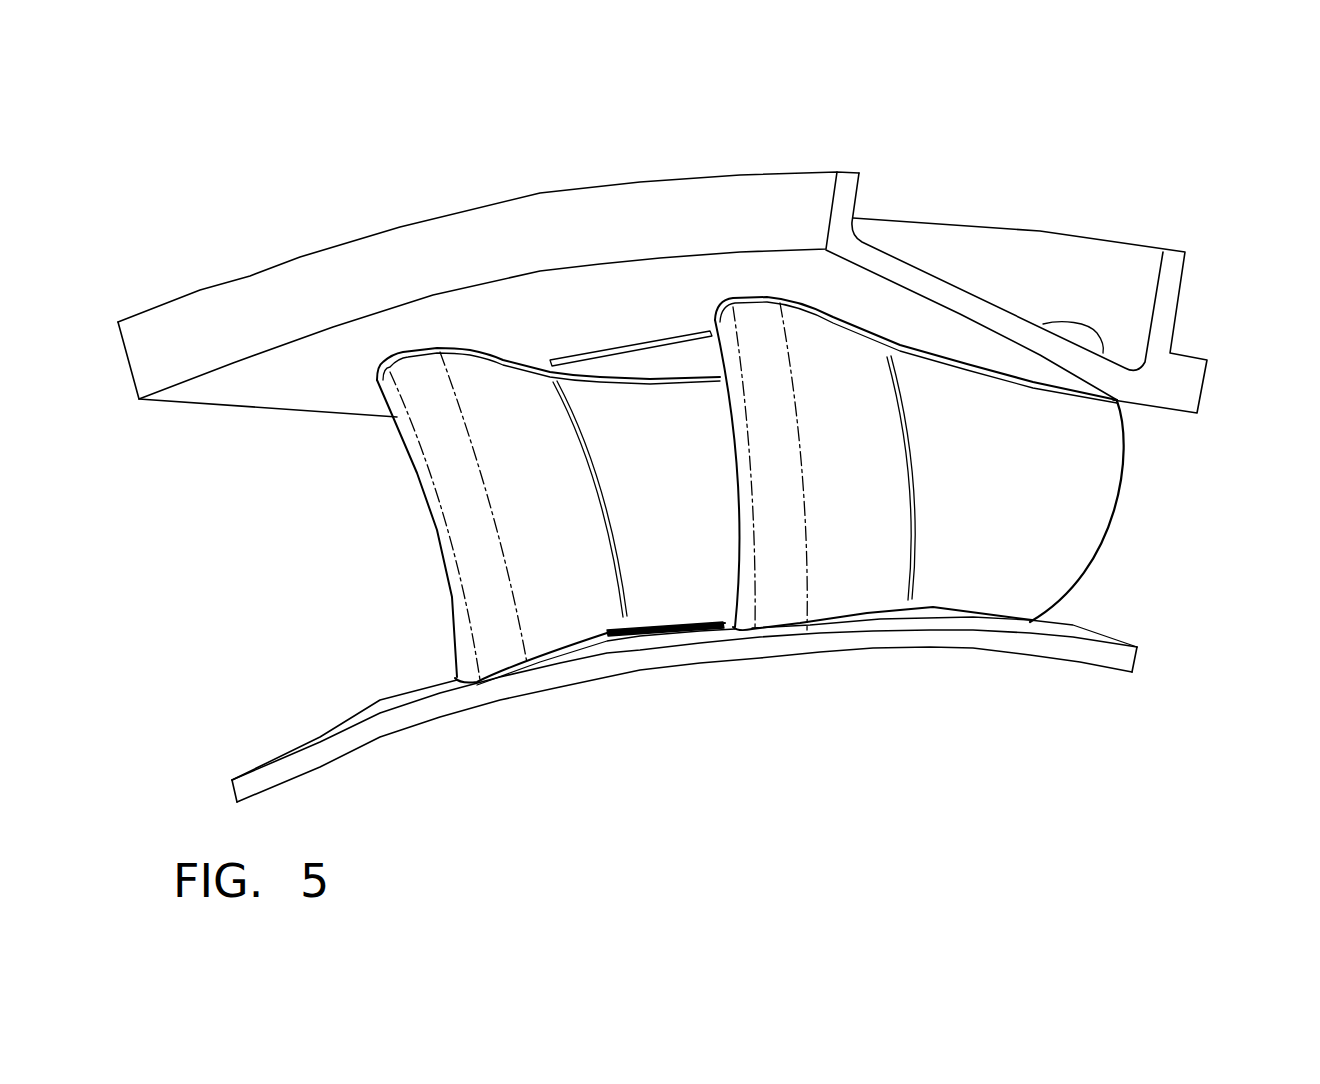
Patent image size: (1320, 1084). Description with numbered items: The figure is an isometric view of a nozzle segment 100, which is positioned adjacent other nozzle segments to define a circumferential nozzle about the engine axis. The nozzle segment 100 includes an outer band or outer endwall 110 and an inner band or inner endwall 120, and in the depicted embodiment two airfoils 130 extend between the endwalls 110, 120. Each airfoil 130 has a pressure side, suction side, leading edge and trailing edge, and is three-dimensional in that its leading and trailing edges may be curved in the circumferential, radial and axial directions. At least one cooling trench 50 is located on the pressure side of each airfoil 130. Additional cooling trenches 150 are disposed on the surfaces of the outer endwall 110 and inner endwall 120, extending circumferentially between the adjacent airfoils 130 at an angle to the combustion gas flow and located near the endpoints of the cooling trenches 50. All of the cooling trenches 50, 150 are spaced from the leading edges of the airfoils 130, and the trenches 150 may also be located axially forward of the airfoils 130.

The nozzle segment 100 is at (1110, 147).
The outer endwall 110 is at (1203, 232).
The inner endwall 120 is at (1190, 627).
The airfoil 130 is at (385, 547).
The cooling trench 50 is at (587, 460).
The cooling trench 150 is at (625, 350).